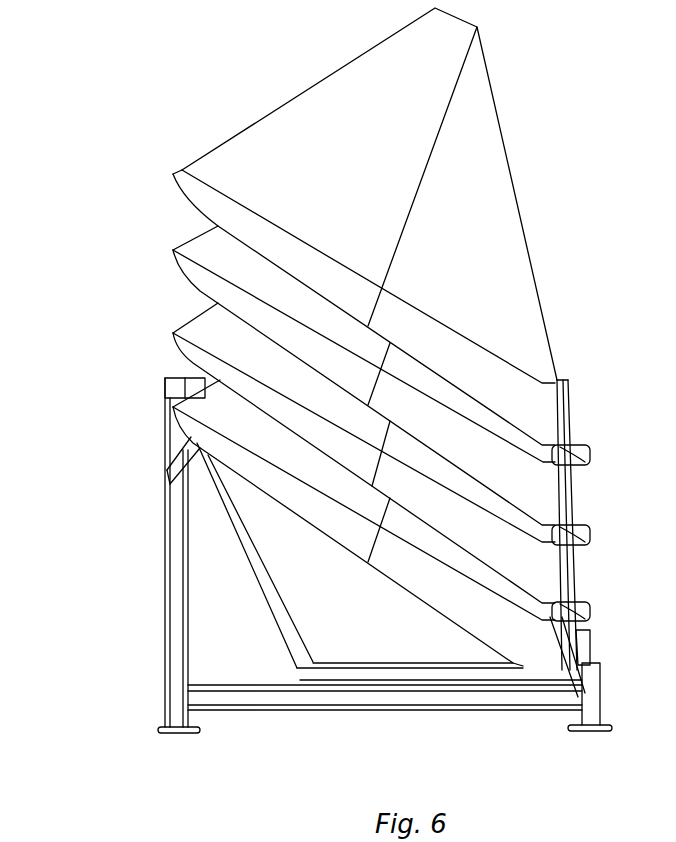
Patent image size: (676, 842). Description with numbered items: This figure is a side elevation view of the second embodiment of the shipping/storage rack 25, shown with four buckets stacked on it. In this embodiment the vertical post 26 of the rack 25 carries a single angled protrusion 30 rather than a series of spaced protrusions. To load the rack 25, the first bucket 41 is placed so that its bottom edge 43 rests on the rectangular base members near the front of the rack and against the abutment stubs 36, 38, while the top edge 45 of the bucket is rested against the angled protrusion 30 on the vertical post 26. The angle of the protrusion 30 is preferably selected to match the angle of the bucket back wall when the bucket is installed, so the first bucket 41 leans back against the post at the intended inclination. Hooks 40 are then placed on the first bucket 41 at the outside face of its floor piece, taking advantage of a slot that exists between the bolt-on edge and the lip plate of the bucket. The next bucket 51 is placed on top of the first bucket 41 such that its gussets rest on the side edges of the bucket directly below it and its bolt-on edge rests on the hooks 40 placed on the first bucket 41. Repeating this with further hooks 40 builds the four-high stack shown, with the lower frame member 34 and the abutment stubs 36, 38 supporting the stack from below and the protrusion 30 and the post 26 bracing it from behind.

The rack 25 is at (166, 358).
The vertical post 26 is at (168, 598).
The angled protrusion 30 is at (165, 478).
The bottom rail 34 is at (476, 712).
The abutment stub 36 is at (598, 658).
The abutment stub 38 is at (582, 643).
The hook 40 is at (598, 459).
The first bucket 41 is at (403, 560).
The bottom edge 43 is at (580, 733).
The top edge 45 is at (167, 427).
The next bucket 51 is at (400, 473).